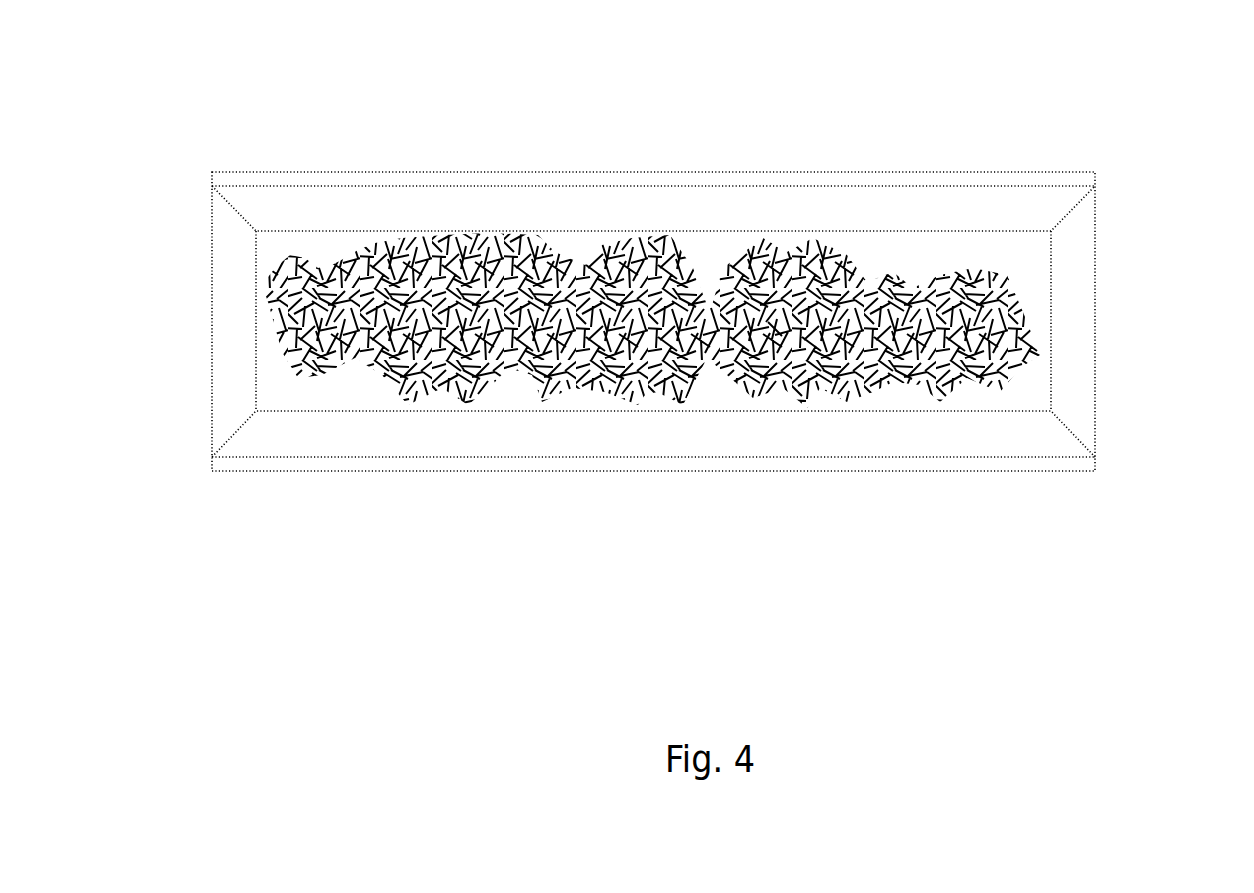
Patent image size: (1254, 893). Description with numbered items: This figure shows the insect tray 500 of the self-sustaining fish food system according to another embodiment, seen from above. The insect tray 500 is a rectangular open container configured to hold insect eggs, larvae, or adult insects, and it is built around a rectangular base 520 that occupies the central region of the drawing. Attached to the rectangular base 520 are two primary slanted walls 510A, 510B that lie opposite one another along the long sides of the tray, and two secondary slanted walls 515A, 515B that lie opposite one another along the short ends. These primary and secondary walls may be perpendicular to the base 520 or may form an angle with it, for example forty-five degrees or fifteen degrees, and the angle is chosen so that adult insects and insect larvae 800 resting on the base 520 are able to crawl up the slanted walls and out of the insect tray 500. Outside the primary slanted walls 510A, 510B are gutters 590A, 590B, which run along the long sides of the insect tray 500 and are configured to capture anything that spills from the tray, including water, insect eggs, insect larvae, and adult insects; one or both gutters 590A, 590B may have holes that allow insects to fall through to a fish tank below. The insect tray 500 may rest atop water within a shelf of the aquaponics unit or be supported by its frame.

The insect tray 500 is at (479, 89).
The gutter 590B is at (378, 180).
The gutter 590A is at (383, 475).
The primary slanted wall 510B is at (721, 212).
The primary slanted wall 510A is at (807, 435).
The secondary slanted wall 515A is at (238, 347).
The secondary slanted wall 515B is at (1075, 348).
The rectangular base 520 is at (903, 255).
The insect larvae 800 is at (775, 330).